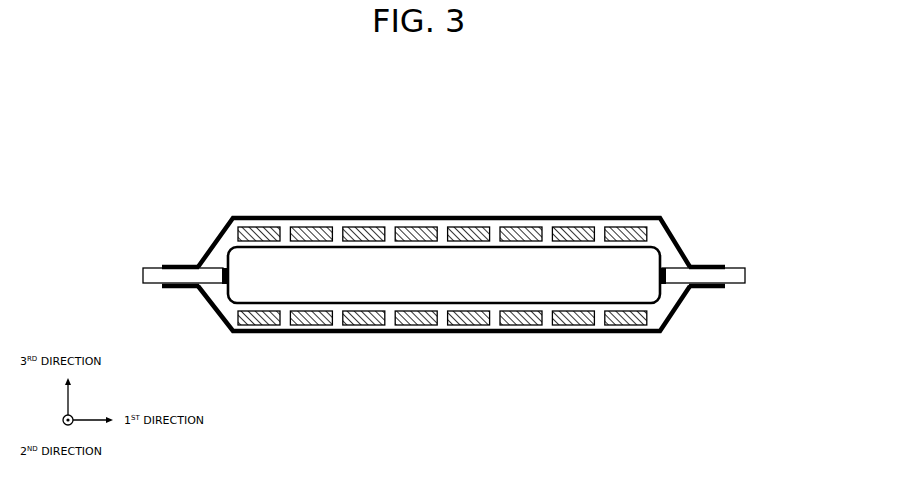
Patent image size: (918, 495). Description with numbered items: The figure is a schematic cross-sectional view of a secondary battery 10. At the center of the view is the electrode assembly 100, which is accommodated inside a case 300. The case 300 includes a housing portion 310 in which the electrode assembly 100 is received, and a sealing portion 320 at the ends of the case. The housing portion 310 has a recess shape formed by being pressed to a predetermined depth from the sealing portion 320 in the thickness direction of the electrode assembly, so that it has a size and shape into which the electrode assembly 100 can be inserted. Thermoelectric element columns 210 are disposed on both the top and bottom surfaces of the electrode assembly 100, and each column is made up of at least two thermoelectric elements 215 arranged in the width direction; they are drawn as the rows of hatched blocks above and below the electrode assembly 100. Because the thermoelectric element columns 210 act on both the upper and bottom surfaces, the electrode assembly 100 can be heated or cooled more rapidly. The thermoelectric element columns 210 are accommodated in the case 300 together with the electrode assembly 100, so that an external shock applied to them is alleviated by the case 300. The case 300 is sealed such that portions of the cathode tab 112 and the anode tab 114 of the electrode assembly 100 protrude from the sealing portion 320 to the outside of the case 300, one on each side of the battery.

The secondary battery 10 is at (120, 123).
The electrode assembly 100 is at (755, 247).
The cathode tab 112 is at (153, 279).
The anode tab 114 is at (738, 284).
The thermoelectric element column 210 is at (442, 318).
The thermoelectric element 215 is at (274, 321).
The case 300 is at (456, 298).
The housing portion 310 is at (497, 334).
The sealing portion 320 is at (177, 264).